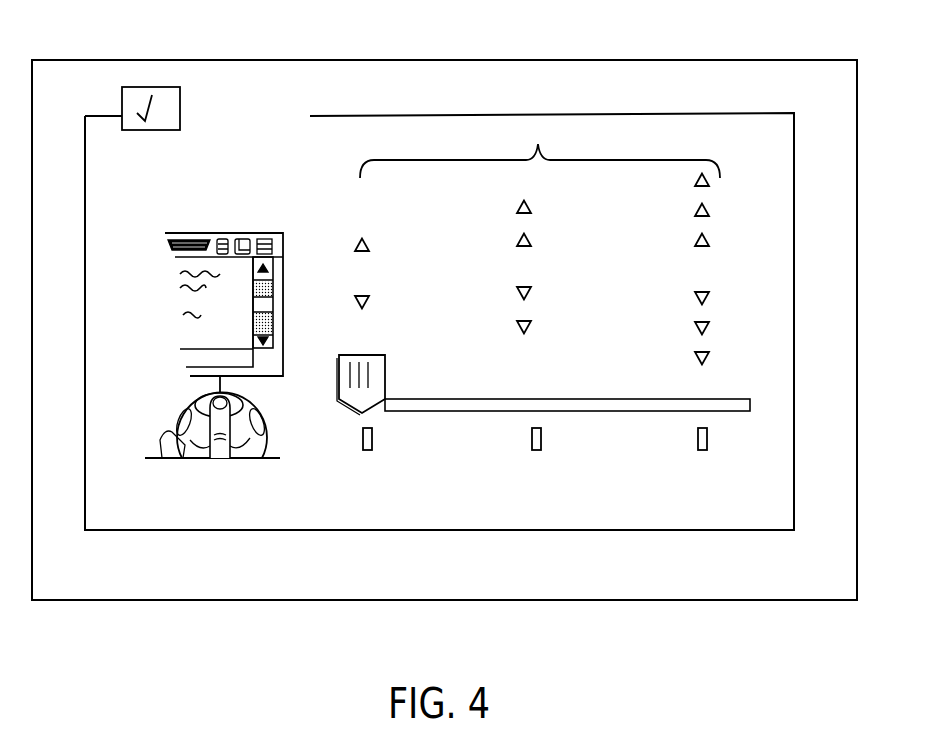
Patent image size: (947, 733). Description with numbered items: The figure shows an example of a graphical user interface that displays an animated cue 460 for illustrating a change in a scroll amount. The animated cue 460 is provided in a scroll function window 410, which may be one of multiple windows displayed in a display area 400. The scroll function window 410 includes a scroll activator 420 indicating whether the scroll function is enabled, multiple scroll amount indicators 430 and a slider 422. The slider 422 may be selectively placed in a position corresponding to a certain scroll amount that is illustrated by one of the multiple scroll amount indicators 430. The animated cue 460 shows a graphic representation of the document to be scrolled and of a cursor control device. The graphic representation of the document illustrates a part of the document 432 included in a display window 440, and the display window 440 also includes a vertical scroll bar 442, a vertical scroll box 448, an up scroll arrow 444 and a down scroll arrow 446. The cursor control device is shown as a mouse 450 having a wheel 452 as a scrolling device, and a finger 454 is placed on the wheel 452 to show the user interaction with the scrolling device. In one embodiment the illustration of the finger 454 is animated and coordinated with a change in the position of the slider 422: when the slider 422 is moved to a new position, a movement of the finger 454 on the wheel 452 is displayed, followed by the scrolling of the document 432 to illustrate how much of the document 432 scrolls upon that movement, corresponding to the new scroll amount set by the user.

The display area 400 is at (858, 233).
The scroll function window 410 is at (480, 530).
The scroll activator 420 is at (133, 87).
The slider 422 is at (386, 372).
The scroll amount indicators 430 is at (537, 241).
The document 432 is at (183, 327).
The display window 440 is at (190, 233).
The vertical scroll bar 442 is at (253, 286).
The up scroll arrow 444 is at (273, 266).
The down scroll arrow 446 is at (273, 340).
The vertical scroll box 448 is at (273, 300).
The mouse 450 is at (230, 435).
The wheel 452 is at (246, 410).
The finger 454 is at (200, 455).
The animated cue 460 is at (140, 219).